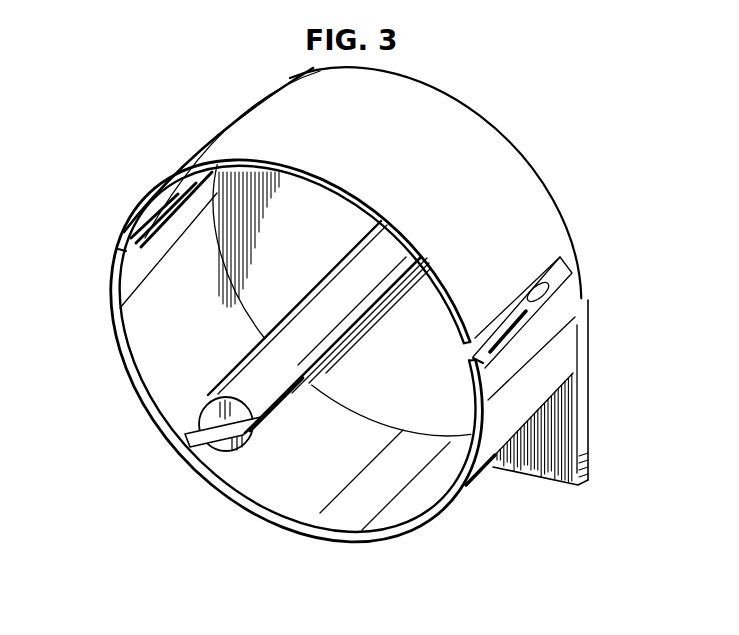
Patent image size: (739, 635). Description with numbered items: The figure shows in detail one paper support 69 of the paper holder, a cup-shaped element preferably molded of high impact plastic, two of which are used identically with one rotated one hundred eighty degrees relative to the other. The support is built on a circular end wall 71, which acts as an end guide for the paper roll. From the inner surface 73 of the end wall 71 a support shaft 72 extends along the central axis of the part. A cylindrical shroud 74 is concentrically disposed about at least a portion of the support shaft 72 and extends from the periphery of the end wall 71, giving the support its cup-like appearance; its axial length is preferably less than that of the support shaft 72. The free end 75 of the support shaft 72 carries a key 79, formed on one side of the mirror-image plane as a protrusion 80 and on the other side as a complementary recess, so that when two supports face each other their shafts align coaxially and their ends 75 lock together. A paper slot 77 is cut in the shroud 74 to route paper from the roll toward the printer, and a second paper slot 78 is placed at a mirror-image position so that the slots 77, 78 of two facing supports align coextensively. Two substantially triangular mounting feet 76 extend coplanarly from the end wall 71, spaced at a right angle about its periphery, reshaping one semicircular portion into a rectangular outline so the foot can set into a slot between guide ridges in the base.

The paper support 69 is at (553, 190).
The circular end wall 71 is at (470, 424).
The support shaft 72 is at (292, 406).
The inner surface 73 is at (263, 273).
The cylindrical shroud 74 is at (471, 116).
The end of the support shaft 75 is at (228, 460).
The mounting foot 76 is at (542, 460).
The paper slot 77 is at (532, 300).
The second paper slot 78 is at (120, 247).
The key 79 is at (231, 452).
The protrusion 80 is at (188, 426).